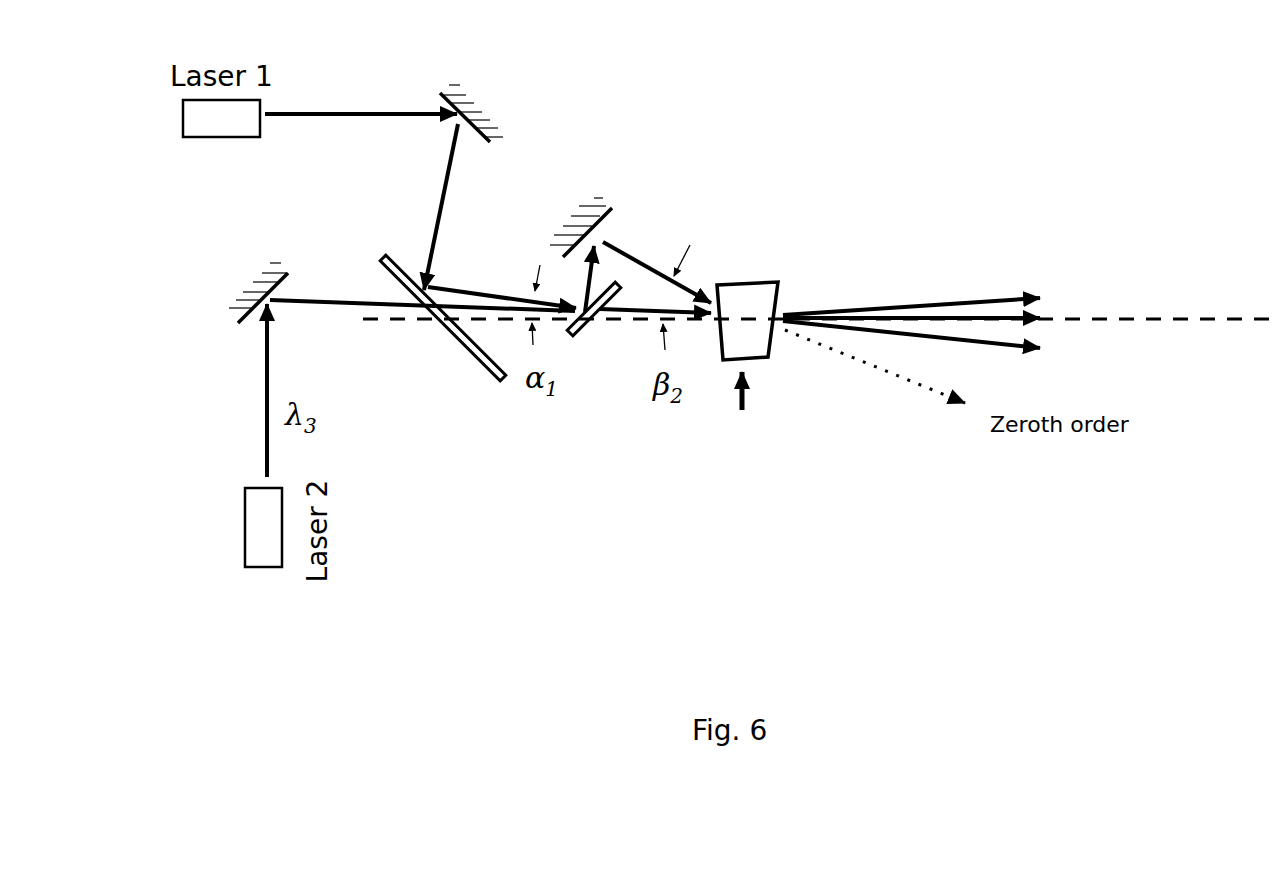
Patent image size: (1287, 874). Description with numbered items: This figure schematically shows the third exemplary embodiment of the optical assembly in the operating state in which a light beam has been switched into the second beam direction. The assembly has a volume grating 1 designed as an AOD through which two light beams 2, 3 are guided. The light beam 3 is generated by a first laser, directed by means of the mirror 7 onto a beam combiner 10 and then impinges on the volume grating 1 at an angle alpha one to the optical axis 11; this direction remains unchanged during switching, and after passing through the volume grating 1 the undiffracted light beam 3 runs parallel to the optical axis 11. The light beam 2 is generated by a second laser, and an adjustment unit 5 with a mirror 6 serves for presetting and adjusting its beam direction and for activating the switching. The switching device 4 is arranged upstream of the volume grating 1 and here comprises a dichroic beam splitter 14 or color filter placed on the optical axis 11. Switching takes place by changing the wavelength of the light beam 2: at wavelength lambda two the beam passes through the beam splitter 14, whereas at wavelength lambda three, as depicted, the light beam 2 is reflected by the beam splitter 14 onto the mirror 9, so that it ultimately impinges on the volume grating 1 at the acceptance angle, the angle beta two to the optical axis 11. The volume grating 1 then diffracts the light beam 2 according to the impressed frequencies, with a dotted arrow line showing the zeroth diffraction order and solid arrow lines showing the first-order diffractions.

The volume grating 1 is at (760, 280).
The light beam 2 is at (343, 303).
The light beam 3 is at (323, 118).
The switching device 4 is at (663, 137).
The adjustment unit 5 is at (185, 343).
The mirror 6 is at (256, 297).
The mirror 7 is at (493, 127).
The mirror 9 is at (603, 222).
The beam combiner 10 is at (461, 347).
The optical axis 11 is at (1168, 318).
The dichroic beam splitter 14 is at (585, 337).